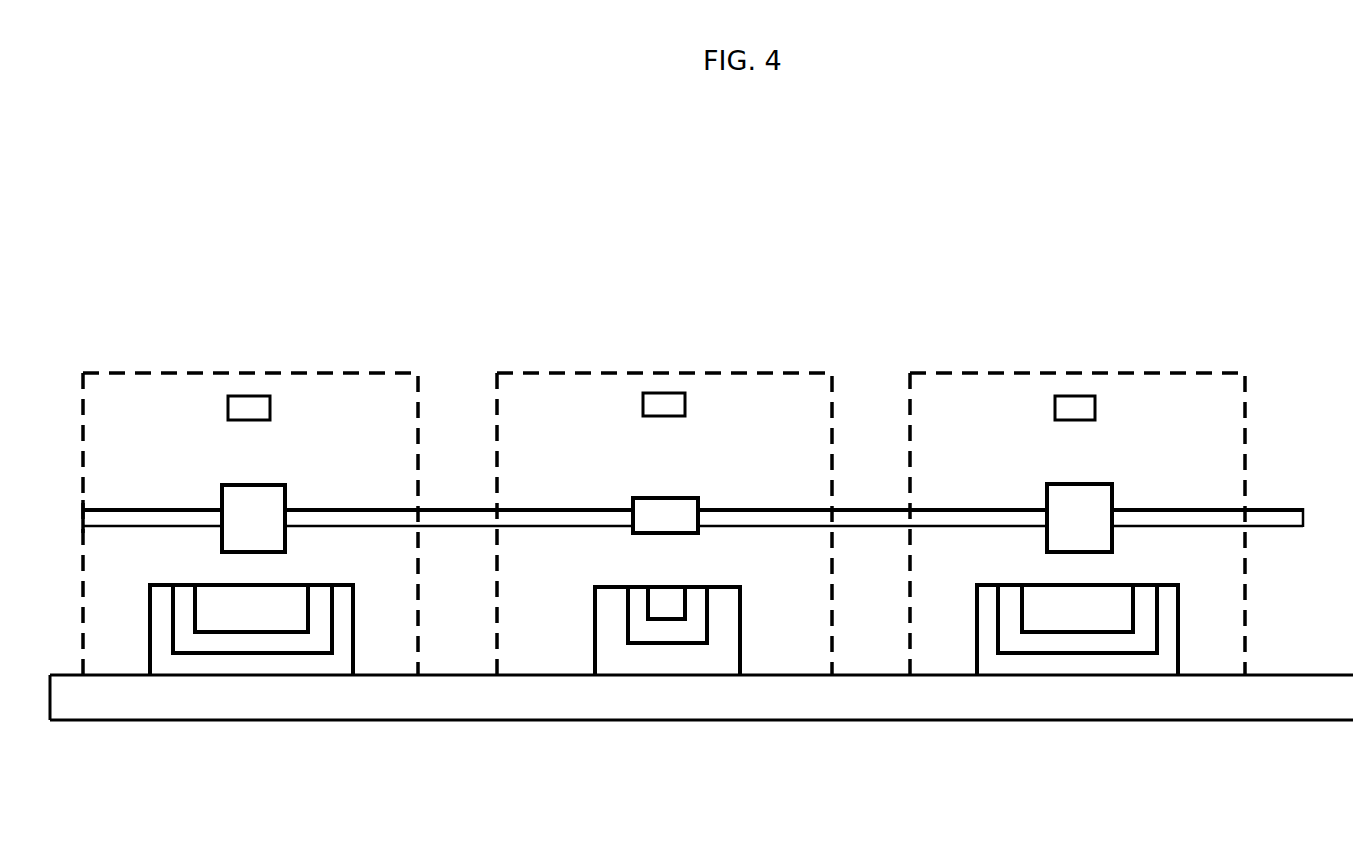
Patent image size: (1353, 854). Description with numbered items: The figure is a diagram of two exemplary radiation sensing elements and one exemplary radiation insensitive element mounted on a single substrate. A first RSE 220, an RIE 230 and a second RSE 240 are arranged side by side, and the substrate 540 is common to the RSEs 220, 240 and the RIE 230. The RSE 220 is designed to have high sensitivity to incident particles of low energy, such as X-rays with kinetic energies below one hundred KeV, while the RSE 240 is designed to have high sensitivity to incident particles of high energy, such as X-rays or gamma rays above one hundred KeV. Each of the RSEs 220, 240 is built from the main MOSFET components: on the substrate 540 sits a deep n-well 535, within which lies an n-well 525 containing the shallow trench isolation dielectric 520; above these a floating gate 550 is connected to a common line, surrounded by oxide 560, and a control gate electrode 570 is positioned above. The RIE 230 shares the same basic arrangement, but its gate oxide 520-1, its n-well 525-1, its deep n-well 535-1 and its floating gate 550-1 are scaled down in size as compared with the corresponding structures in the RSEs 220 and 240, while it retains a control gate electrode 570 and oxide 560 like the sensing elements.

The RSE 220 is at (317, 373).
The RIE 230 is at (708, 373).
The RSE 240 is at (1145, 373).
The shallow trench isolation dielectric 520 is at (287, 613).
The gate oxide 520-1 is at (668, 595).
The n-well 525 is at (217, 642).
The n-well 525-1 is at (662, 630).
The deep n-well 535 is at (165, 655).
The deep n-well 535-1 is at (608, 648).
The substrate 540 is at (778, 723).
The floating gate 550 is at (222, 485).
The floating gate 550-1 is at (635, 498).
The oxide 560 is at (347, 457).
The control gate electrode 570 is at (230, 396).